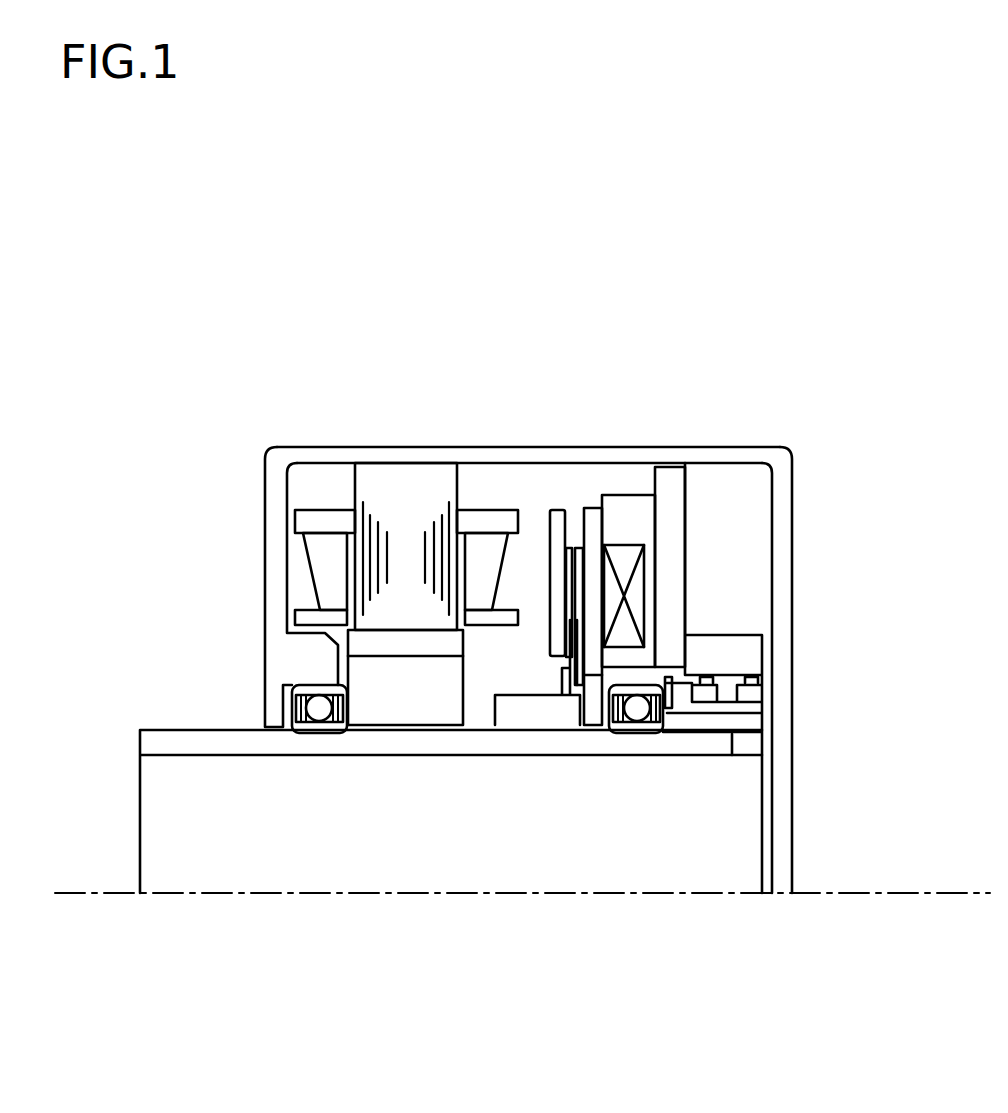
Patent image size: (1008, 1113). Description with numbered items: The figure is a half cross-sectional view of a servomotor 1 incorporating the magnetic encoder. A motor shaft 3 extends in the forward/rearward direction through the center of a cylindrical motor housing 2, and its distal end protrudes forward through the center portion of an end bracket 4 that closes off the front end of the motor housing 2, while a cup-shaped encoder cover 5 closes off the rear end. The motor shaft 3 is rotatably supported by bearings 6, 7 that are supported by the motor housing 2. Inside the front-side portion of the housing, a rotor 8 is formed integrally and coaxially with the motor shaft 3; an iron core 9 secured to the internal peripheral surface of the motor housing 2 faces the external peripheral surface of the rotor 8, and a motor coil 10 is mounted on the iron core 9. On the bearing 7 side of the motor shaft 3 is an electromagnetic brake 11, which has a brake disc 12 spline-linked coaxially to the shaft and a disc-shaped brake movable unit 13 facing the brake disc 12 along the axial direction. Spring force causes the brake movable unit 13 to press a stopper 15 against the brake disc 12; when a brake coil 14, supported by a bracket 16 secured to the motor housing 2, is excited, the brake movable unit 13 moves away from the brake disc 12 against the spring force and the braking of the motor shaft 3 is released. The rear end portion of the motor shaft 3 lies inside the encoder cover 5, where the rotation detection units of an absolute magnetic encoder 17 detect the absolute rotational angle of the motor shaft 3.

The servomotor 1 is at (130, 467).
The motor housing 2 is at (473, 447).
The motor shaft 3 is at (178, 729).
The end bracket 4 is at (265, 605).
The encoder cover 5 is at (793, 520).
The bearing 6 is at (318, 684).
The bearing 7 is at (632, 734).
The rotor 8 is at (465, 648).
The iron core 9 is at (355, 487).
The motor coil 10 is at (307, 563).
The electromagnetic brake 11 is at (588, 506).
The brake disc 12 is at (572, 546).
The brake movable unit 13 is at (623, 494).
The brake coil 14 is at (620, 547).
The stopper 15 is at (553, 510).
The bracket 16 is at (670, 517).
The absolute magnetic encoder 17 is at (734, 736).